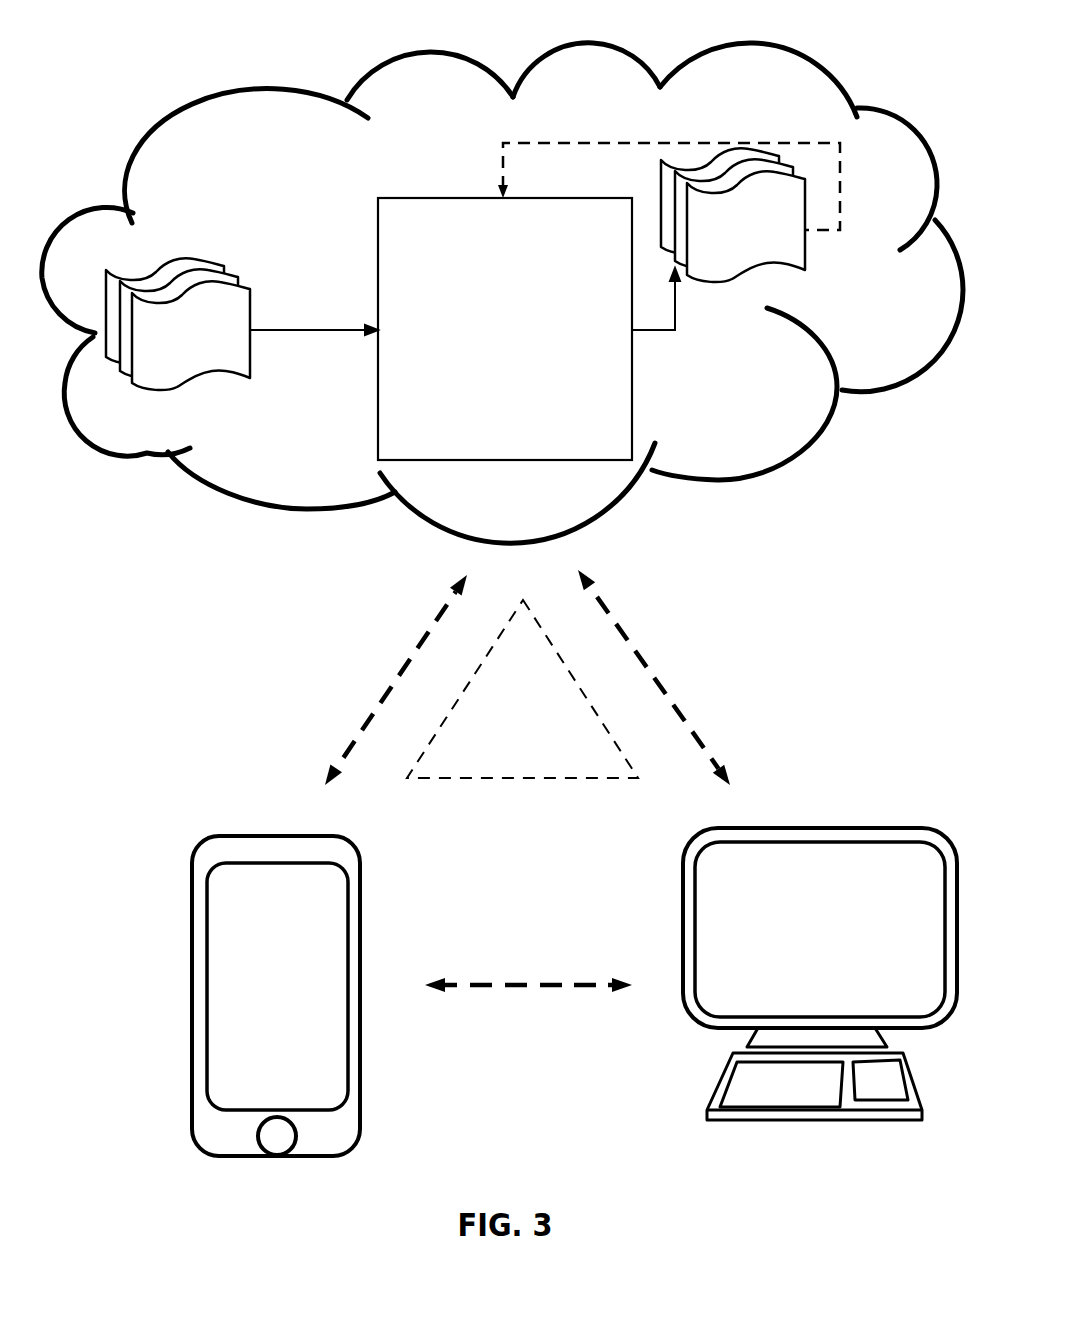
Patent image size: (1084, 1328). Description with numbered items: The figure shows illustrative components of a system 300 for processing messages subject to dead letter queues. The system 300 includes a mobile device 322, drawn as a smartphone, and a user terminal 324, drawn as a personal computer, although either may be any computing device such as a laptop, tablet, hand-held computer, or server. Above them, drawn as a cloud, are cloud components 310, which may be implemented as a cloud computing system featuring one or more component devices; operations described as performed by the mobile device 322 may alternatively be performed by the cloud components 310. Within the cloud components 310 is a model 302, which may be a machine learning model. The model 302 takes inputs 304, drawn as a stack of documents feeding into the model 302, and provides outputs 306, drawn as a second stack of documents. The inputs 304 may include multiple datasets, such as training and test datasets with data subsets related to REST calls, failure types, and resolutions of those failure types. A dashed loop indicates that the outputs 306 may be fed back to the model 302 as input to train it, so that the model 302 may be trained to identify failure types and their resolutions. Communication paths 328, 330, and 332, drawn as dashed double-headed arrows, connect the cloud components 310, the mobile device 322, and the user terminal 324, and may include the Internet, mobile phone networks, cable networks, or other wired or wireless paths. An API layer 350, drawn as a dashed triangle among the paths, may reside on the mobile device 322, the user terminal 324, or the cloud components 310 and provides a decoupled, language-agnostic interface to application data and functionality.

The system 300 is at (481, 41).
The model 302 is at (486, 344).
The inputs 304 is at (198, 257).
The outputs 306 is at (787, 258).
The cloud components 310 is at (803, 92).
The mobile device 322 is at (264, 802).
The user terminal 324 is at (815, 810).
The communication path 328 is at (347, 656).
The communication path 330 is at (735, 625).
The communication path 332 is at (522, 946).
The API layer 350 is at (506, 717).